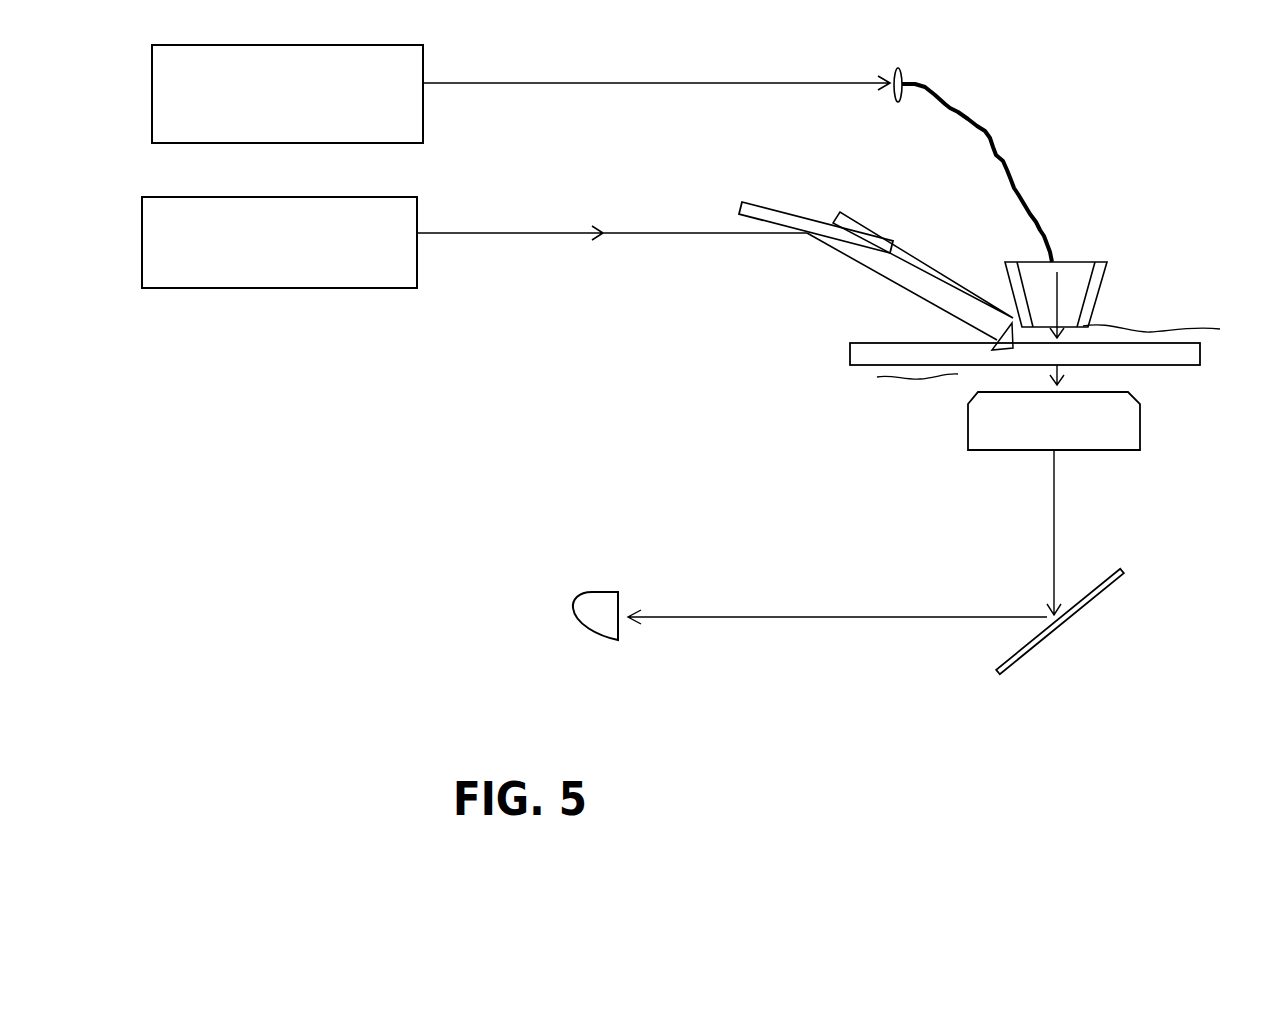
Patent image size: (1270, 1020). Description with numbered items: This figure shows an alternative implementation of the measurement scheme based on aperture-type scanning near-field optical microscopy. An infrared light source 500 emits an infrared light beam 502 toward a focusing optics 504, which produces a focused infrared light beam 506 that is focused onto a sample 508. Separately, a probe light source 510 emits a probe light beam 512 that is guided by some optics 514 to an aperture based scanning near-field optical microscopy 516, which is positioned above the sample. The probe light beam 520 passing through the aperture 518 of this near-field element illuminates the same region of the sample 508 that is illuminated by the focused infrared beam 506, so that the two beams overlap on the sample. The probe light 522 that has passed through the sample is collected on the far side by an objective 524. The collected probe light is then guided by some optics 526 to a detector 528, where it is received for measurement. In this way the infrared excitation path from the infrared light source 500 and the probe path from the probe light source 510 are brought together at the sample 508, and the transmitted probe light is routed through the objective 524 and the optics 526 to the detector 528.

The infrared light source 500 is at (279, 242).
The infrared light beam 502 is at (612, 225).
The focusing optics 504 is at (816, 223).
The focused infrared light beam 506 is at (910, 281).
The sample 508 is at (1025, 382).
The probe light source 510 is at (287, 94).
The probe light beam 512 is at (656, 78).
The optics 514 is at (892, 77).
The aperture based scanning near-field optical microscopy 516 is at (983, 173).
The aperture 518 is at (1077, 300).
The probe light beam through the aperture 520 is at (1176, 319).
The probe light after passing through the sample 522 is at (1077, 379).
The objective 524 is at (1077, 421).
The optics 526 is at (1060, 621).
The detector 528 is at (591, 634).